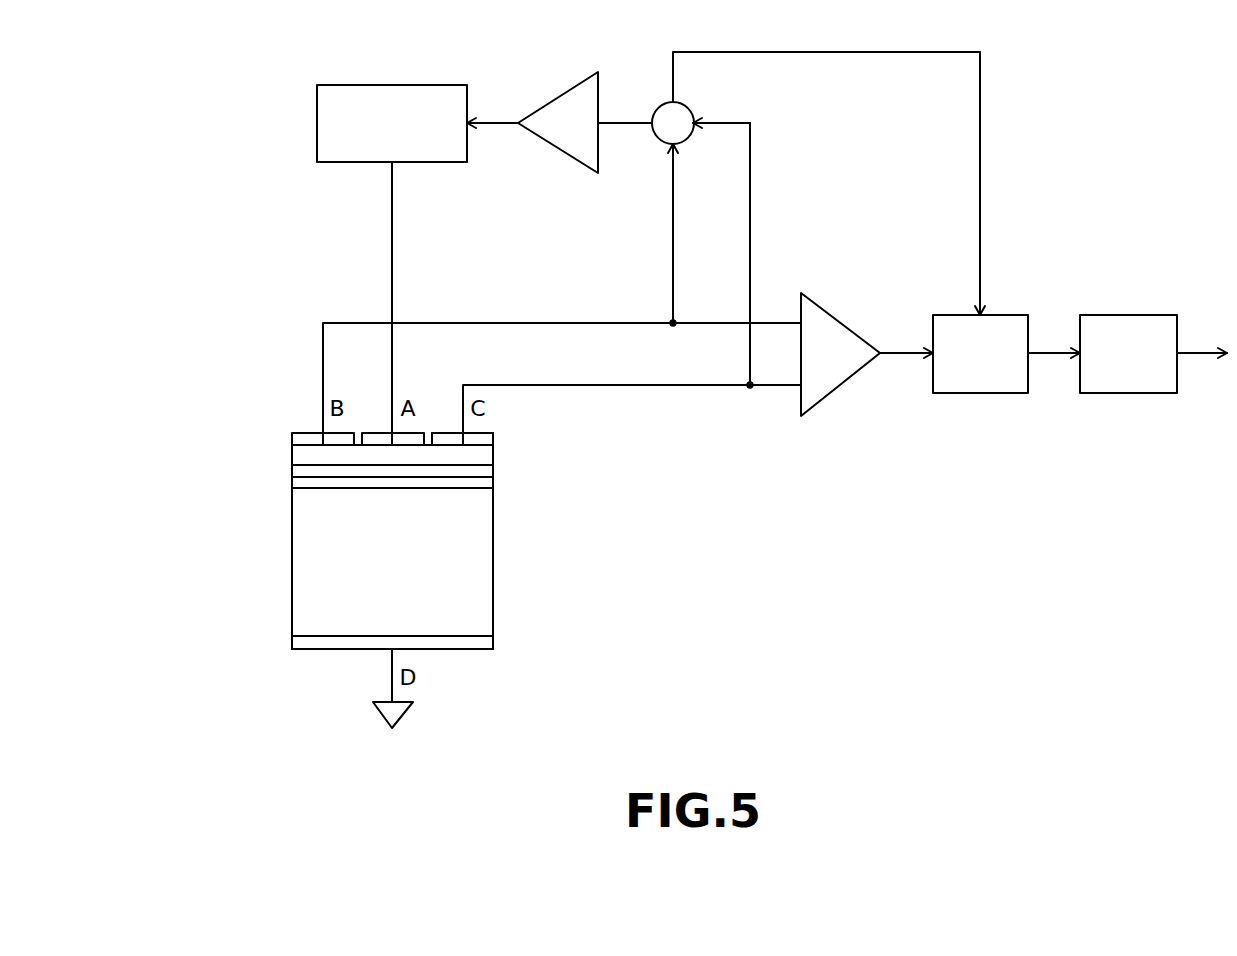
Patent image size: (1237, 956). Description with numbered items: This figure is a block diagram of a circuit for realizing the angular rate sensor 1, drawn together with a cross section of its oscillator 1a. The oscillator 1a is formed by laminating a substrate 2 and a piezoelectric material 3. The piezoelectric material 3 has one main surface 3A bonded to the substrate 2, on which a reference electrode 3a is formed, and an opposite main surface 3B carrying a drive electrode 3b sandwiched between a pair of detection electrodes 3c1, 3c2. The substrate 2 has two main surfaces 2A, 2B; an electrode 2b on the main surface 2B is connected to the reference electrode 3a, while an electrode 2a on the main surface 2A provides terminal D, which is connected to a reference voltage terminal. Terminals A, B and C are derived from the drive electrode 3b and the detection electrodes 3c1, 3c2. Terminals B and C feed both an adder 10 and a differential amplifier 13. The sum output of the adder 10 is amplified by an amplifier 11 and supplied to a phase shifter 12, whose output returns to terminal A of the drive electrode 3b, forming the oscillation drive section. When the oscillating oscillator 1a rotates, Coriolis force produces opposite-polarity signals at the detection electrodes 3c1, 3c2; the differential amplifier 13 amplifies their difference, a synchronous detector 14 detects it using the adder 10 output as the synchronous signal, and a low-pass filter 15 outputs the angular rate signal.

The angular rate sensor 1 is at (632, 547).
The oscillator 1a is at (480, 578).
The substrate 2 is at (307, 568).
The electrode 2a is at (313, 640).
The main surface of substrate 2A is at (352, 637).
The electrode 2b is at (413, 483).
The main surface of substrate 2B is at (493, 487).
The piezoelectric material 3 is at (303, 452).
The reference electrode 3a is at (357, 467).
The main surface of piezoelectric material 3A is at (305, 467).
The drive electrode 3b is at (375, 433).
The main surface of piezoelectric material 3B is at (493, 438).
The detection electrode 3c1 is at (302, 433).
The detection electrode 3c2 is at (447, 433).
The adder 10 is at (688, 106).
The amplifier 11 is at (548, 103).
The phase shifter 12 is at (350, 85).
The differential amplifier 13 is at (847, 327).
The synchronous detector 14 is at (1013, 315).
The low-pass filter 15 is at (1130, 315).